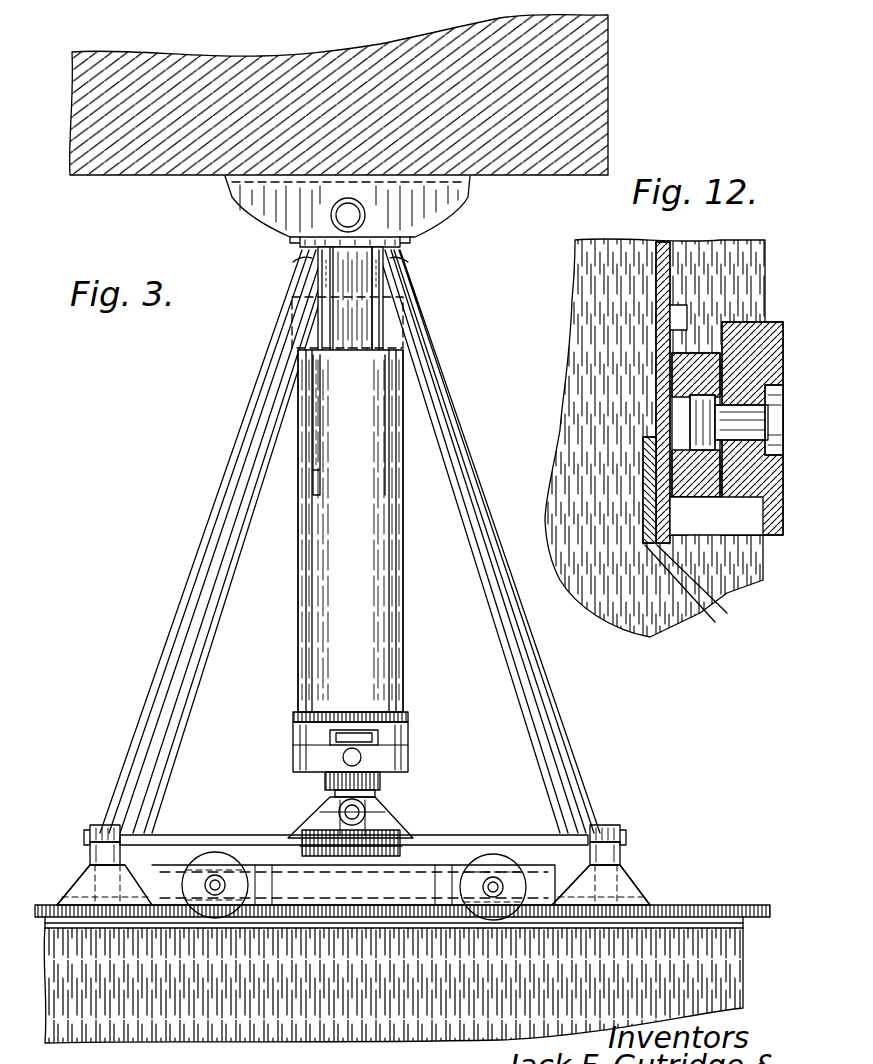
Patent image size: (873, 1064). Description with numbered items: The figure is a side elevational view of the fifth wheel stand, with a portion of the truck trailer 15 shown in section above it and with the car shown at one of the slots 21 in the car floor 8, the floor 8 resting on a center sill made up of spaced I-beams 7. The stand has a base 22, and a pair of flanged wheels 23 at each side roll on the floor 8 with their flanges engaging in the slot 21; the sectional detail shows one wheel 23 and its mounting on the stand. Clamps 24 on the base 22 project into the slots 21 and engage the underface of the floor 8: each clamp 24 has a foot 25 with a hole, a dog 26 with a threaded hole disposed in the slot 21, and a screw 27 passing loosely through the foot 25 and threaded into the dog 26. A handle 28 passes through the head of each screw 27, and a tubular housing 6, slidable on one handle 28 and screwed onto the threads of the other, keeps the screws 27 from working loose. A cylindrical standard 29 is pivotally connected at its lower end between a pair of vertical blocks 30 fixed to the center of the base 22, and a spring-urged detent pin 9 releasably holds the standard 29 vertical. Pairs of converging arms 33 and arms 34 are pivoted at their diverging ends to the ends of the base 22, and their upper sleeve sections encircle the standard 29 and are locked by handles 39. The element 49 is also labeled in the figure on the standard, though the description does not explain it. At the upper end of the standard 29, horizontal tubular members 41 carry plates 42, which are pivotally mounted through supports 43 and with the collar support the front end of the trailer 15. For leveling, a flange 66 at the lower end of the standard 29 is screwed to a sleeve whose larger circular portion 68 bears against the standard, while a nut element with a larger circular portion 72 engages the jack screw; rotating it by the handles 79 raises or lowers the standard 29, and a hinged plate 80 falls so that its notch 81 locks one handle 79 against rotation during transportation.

In FIG. 3, the truck trailer 15 is at (336, 62).
In FIG. 3, the plate 42 is at (452, 183).
In FIG. 3, the support 43 is at (438, 212).
In FIG. 3, the tubular member 41 is at (332, 216).
In FIG. 3, the arm 33 is at (200, 558).
In FIG. 3, the arm 34 is at (540, 652).
In FIG. 3, the cylindrical standard 29 is at (397, 614).
In FIG. 3, the inner ram 49 is at (345, 617).
In FIG. 3, the handle 39 is at (318, 478).
In FIG. 3, the flange 66 is at (408, 716).
In FIG. 3, the larger circular portion of sleeve 68 is at (408, 732).
In FIG. 3, the plate 80 is at (372, 752).
In FIG. 3, the larger circular portion of nut element 72 is at (398, 764).
In FIG. 3, the notch 81 is at (344, 760).
In FIG. 3, the handle 79 is at (336, 770).
In FIG. 3, the vertical block 30 is at (385, 818).
In FIG. 3, the detent pin 9 is at (358, 810).
In FIG. 3, the tubular housing 6 is at (322, 828).
In FIG. 3, the handle 28 is at (194, 836).
In FIG. 3, the screw 27 is at (100, 826).
In FIG. 3, the foot 25 is at (92, 852).
In FIG. 3, the clamp 24 is at (68, 878).
In FIG. 3, the dog 26 is at (78, 892).
In FIG. 3, the flanged wheel 23 is at (220, 914).
In FIG. 12, the flanged wheel 23 is at (780, 338).
In FIG. 3, the slot 21 is at (682, 906).
In FIG. 3, the floor 8 is at (742, 908).
In FIG. 12, the floor 8 is at (752, 276).
In FIG. 3, the base 22 is at (360, 900).
In FIG. 12, the base 22 is at (668, 278).
In FIG. 3, the I-beam 7 is at (734, 976).